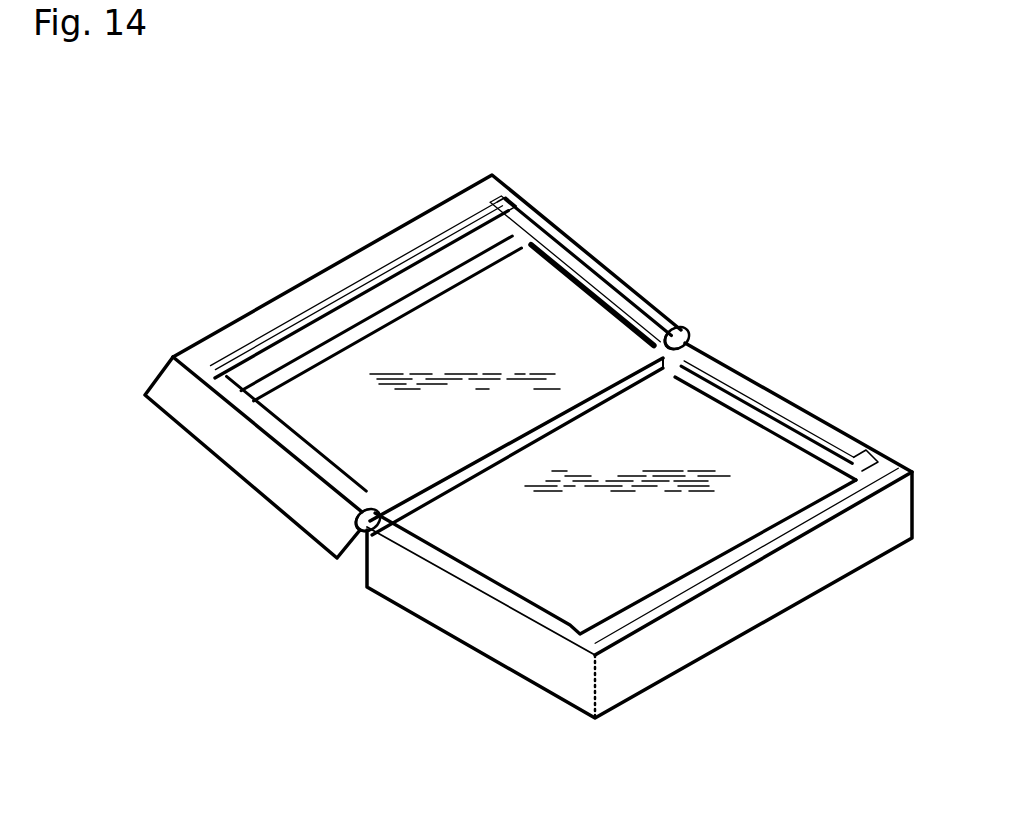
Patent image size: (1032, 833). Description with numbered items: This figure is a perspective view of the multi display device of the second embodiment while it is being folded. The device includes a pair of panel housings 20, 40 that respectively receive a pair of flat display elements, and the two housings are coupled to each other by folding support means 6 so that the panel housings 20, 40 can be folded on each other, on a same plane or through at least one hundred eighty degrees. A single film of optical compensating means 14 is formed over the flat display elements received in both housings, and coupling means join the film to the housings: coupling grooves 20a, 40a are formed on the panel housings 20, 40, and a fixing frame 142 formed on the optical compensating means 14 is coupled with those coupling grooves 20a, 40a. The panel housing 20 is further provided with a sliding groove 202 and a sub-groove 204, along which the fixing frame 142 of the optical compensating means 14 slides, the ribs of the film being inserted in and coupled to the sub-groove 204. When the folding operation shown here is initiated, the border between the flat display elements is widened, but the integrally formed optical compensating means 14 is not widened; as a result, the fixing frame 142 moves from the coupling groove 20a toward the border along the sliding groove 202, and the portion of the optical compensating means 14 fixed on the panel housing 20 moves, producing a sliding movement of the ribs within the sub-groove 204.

The optical compensating means 14 is at (745, 443).
The fixing frame 142 is at (450, 283).
The panel housing 20 is at (258, 473).
The coupling groove 20a is at (343, 305).
The sliding groove 202 is at (533, 247).
The sub-groove 204 is at (620, 317).
The folding support means 6 is at (687, 332).
The panel housing 40 is at (450, 598).
The coupling groove 40a is at (727, 540).